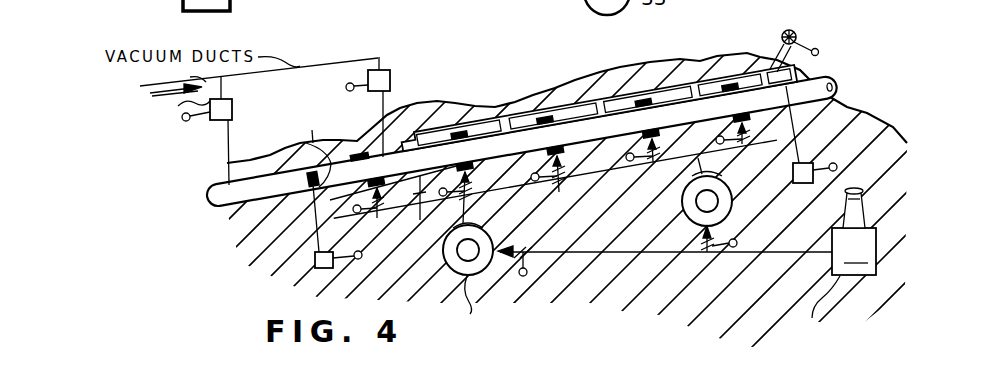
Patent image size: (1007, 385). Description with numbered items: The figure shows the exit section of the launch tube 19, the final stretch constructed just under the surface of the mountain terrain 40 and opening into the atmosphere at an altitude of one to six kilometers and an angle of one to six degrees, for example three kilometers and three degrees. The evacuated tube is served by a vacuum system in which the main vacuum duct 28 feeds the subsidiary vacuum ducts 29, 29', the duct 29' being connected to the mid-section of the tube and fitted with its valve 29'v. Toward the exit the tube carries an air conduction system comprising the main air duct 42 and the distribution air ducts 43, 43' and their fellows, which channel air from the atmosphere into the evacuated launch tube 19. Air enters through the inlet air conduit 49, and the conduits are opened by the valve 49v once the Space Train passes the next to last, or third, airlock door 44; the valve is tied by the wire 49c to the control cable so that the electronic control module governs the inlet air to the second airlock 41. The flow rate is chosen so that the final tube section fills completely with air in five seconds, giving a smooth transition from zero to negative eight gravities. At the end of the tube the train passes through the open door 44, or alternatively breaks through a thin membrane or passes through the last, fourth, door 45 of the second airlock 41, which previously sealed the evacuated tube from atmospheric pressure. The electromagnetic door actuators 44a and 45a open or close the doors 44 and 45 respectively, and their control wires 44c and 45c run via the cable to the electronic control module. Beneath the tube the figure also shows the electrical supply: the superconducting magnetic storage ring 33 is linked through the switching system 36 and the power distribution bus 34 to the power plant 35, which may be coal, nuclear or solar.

The launch tube 19 is at (217, 194).
The main vacuum duct 28 is at (242, 79).
The subsidiary vacuum duct 29 is at (179, 116).
The subsidiary vacuum duct 29' is at (295, 98).
The valve 29'v is at (254, 131).
The superconducting magnetic storage ring 33 is at (484, 272).
The power distribution system 34 is at (420, 219).
The power plants 35 is at (829, 273).
The switching system 36 is at (472, 186).
The mountain terrain 40 is at (620, 69).
The second airlock system 41 is at (310, 153).
The main air duct 42 is at (452, 118).
The secondary air duct 43 is at (529, 91).
The secondary air duct 43' is at (610, 74).
The second airlock entrance door 44 is at (310, 176).
The electromagnetic door actuator 44a is at (315, 261).
The control wire 44c is at (364, 256).
The second airlock exit door 45 is at (789, 134).
The electromagnetic door actuator 45a is at (812, 160).
The control wire 45c is at (837, 167).
The inlet air conduit 49 is at (797, 32).
The valve 49v is at (784, 30).
The wire 49c is at (819, 52).